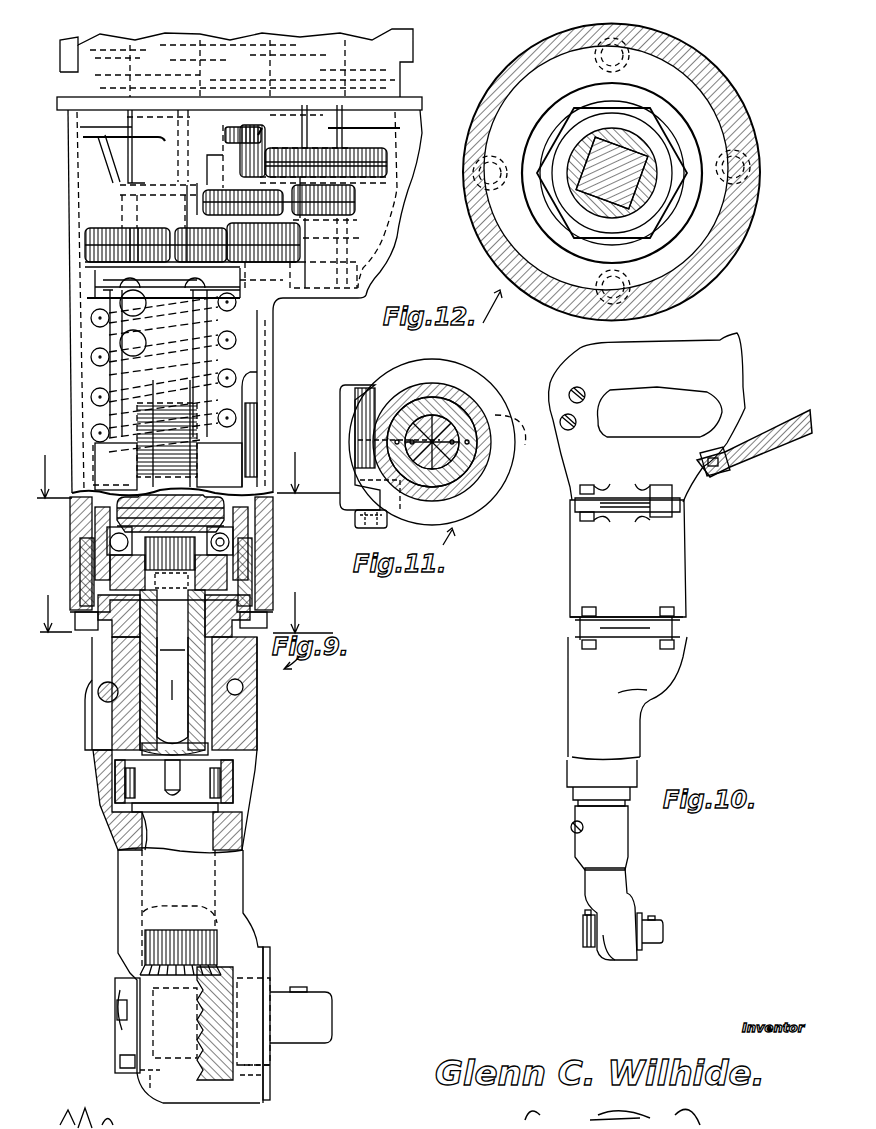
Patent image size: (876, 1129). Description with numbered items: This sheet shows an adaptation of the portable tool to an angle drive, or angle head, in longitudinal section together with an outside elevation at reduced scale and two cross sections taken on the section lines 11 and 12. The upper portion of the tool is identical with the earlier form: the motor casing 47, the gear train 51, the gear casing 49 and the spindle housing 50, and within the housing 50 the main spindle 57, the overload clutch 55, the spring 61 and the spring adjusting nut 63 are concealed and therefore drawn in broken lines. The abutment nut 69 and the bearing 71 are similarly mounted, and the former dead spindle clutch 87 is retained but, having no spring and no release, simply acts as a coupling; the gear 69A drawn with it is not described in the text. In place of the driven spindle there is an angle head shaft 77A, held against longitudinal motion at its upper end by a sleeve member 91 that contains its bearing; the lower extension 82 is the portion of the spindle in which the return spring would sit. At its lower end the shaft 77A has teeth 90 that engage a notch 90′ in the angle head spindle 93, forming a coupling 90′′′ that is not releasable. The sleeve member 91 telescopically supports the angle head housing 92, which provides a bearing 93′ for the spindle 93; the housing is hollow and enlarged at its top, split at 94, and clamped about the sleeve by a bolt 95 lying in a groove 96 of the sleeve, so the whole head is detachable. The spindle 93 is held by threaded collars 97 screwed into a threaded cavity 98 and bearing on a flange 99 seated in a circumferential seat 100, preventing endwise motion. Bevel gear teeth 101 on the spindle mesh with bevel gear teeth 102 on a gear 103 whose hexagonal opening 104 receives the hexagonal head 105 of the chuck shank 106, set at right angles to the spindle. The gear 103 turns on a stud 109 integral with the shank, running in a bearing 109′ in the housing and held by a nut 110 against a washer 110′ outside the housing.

In FIG. 9, the motor casing 47 is at (405, 52).
In FIG. 10, the motor casing 47 is at (670, 558).
In FIG. 9, the gear casing 49 is at (390, 150).
In FIG. 10, the gear casing 49 is at (670, 665).
In FIG. 9, the spindle housing 50 is at (276, 352).
In FIG. 12, the spindle housing 50 is at (723, 243).
In FIG. 10, the spindle housing 50 is at (632, 733).
In FIG. 9, the gear train 51 is at (355, 205).
In FIG. 9, the overload clutch 55 is at (95, 274).
In FIG. 9, the main spindle 57 is at (275, 328).
In FIG. 9, the spring 61 is at (90, 354).
In FIG. 9, the spring adjusting nut 63 is at (93, 445).
In FIG. 12, the abutment nut 69 is at (550, 183).
In FIG. 9, the gear 69A is at (125, 508).
In FIG. 9, the bearing 71 is at (225, 538).
In FIG. 9, the angle head shaft 77A is at (140, 648).
In FIG. 11, the angle head shaft 77A is at (440, 412).
In FIG. 9, the lower extension 82 is at (175, 693).
In FIG. 11, the lower extension 82 is at (445, 425).
In FIG. 9, the dead spindle clutch 87 is at (85, 575).
In FIG. 9, the teeth 90 is at (165, 770).
In FIG. 9, the notch 90′ is at (168, 788).
In FIG. 9, the coupling 90′′′ is at (125, 780).
In FIG. 9, the sleeve member 91 is at (125, 660).
In FIG. 11, the sleeve member 91 is at (478, 402).
In FIG. 9, the angle head housing 92 is at (245, 826).
In FIG. 11, the angle head housing 92 is at (495, 470).
In FIG. 10, the angle head housing 92 is at (625, 853).
In FIG. 9, the angle head spindle 93 is at (218, 908).
In FIG. 9, the bearing 93′ is at (245, 880).
In FIG. 9, the split 94 is at (98, 730).
In FIG. 11, the split 94 is at (345, 443).
In FIG. 9, the bolt 95 is at (108, 700).
In FIG. 11, the bolt 95 is at (365, 530).
In FIG. 10, the bolt 95 is at (571, 827).
In FIG. 9, the groove 96 is at (243, 690).
In FIG. 11, the groove 96 is at (519, 442).
In FIG. 9, the threaded collars 97 is at (235, 768).
In FIG. 9, the threaded cavity 98 is at (225, 775).
In FIG. 9, the flange 99 is at (140, 850).
In FIG. 9, the circumferential seat 100 is at (135, 808).
In FIG. 9, the bevel gear teeth 101 is at (220, 935).
In FIG. 9, the bevel gear teeth 102 is at (240, 960).
In FIG. 9, the gear 103 is at (198, 1023).
In FIG. 9, the hexagonal opening 104 is at (270, 1075).
In FIG. 9, the hexagonal head 105 is at (272, 980).
In FIG. 9, the chuck shank 106 is at (310, 1030).
In FIG. 10, the chuck shank 106 is at (665, 930).
In FIG. 9, the stud 109 is at (175, 1023).
In FIG. 9, the bearing 109′ is at (140, 1075).
In FIG. 9, the nut 110 is at (115, 990).
In FIG. 10, the nut 110 is at (583, 933).
In FIG. 9, the washer 110′ is at (122, 990).
In FIG. 10, the washer 110′ is at (585, 915).
In FIG. 9, the section line 11 is at (308, 588).
In FIG. 9, the section line 12 is at (305, 449).